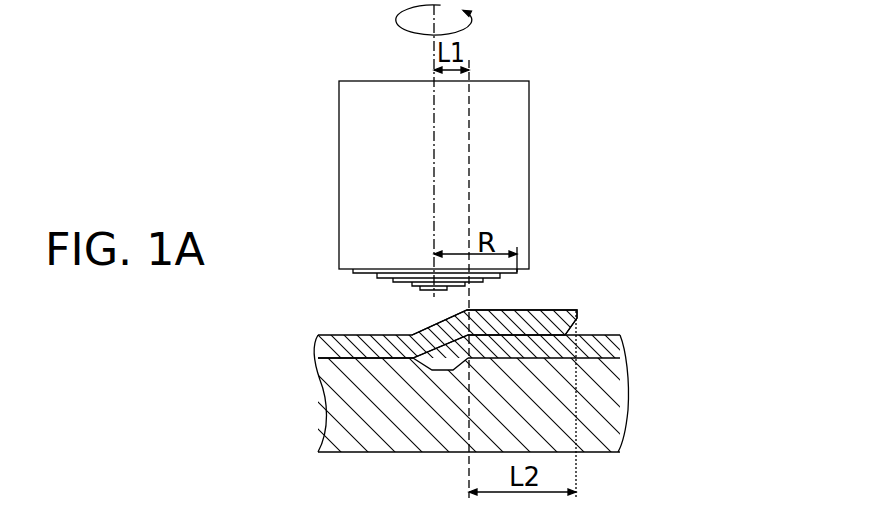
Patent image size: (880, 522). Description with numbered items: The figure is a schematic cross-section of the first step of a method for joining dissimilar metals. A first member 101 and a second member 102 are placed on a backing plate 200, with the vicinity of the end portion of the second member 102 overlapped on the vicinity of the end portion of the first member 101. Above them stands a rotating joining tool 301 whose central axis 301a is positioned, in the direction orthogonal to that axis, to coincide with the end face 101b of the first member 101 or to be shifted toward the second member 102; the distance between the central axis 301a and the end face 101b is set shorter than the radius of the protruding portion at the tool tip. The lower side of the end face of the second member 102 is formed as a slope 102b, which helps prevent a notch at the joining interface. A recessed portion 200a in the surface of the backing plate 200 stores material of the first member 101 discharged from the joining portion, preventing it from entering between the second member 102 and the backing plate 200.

The joining tool 301 is at (502, 179).
The central axis 301a is at (434, 58).
The second member 102 is at (323, 348).
The slope 102b is at (578, 330).
The first member 101 is at (610, 348).
The end face 101b is at (465, 348).
The backing plate 200 is at (610, 402).
The recessed portion 200a is at (441, 362).